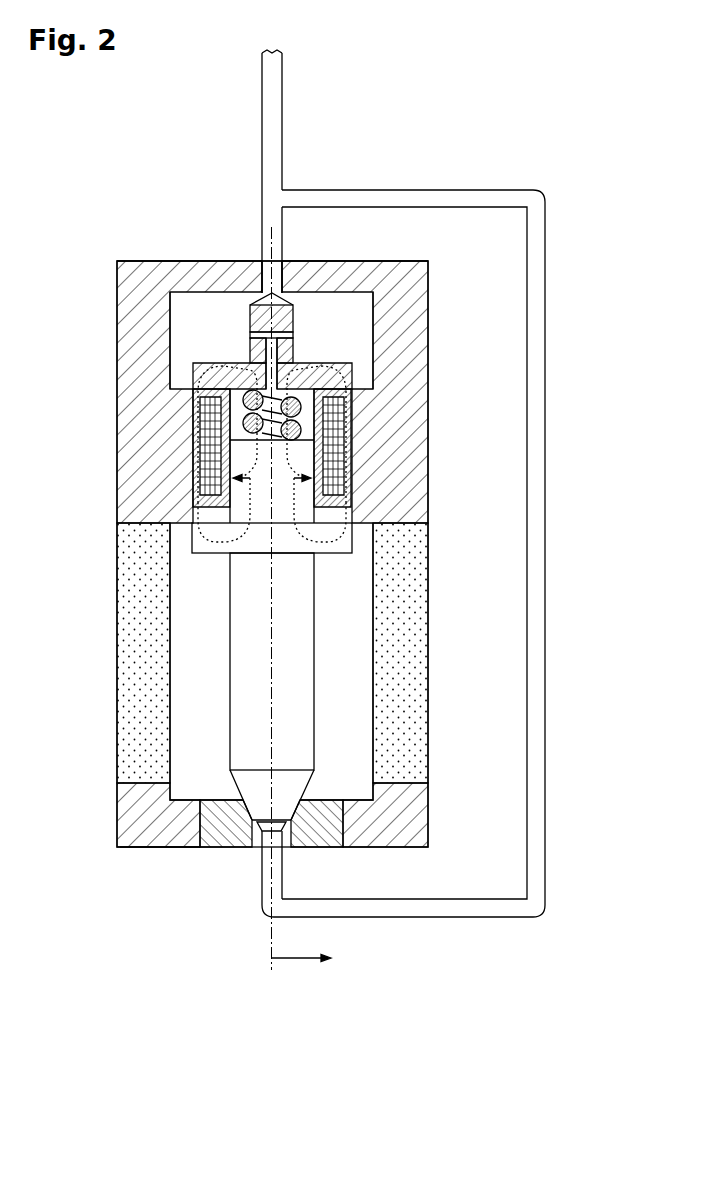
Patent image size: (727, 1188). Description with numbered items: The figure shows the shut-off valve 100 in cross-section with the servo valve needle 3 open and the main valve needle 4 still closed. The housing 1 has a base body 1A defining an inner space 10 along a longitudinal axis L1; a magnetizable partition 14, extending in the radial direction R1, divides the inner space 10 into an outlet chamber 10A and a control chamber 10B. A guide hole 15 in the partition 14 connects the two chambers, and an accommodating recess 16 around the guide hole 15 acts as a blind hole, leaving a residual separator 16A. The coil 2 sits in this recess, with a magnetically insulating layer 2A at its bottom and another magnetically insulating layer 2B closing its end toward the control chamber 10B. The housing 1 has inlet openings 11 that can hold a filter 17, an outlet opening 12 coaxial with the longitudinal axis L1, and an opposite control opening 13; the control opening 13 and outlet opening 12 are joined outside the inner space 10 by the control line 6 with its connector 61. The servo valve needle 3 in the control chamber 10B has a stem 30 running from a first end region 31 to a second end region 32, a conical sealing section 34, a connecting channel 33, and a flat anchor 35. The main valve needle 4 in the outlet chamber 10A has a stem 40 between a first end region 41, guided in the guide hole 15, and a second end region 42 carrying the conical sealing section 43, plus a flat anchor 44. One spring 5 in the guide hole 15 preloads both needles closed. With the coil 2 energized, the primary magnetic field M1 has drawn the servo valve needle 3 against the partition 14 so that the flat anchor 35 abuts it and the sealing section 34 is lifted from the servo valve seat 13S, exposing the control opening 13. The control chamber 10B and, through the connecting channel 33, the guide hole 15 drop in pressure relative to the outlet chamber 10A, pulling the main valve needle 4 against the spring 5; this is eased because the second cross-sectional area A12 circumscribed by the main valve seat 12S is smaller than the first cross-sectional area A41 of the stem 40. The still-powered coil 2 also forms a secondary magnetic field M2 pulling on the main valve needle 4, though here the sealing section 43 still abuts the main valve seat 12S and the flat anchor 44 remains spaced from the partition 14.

The shut-off valve 100 is at (78, 135).
The housing 1 is at (117, 824).
The base body 1A is at (138, 840).
The inner space 10 is at (207, 656).
The outlet chamber 10A is at (179, 598).
The control chamber 10B is at (180, 330).
The inlet opening 11 is at (128, 656).
The outlet opening 12 is at (252, 832).
The main valve seat 12S is at (250, 803).
The second cross-sectional area A12 is at (281, 822).
The control opening 13 is at (240, 261).
The servo valve seat 13S is at (296, 261).
The partition 14 is at (190, 368).
The guide hole 15 is at (312, 422).
The accommodating recess 16 is at (212, 450).
The residual separator 16A is at (200, 503).
The filter 17 is at (128, 688).
The coil 2 is at (200, 468).
The magnetically insulating layer 2A is at (352, 498).
The magnetically insulating layer 2B is at (196, 392).
The servo valve needle 3 is at (323, 328).
The stem 30 is at (258, 288).
The first end region 31 is at (297, 303).
The second end region 32 is at (297, 350).
The connecting channel 33 is at (250, 304).
The sealing section 34 is at (294, 302).
The flat anchor 35 is at (352, 375).
The main valve needle 4 is at (212, 708).
The stem 40 is at (290, 695).
The first end region 41 is at (323, 460).
The first cross-sectional area A41 is at (242, 528).
The second end region 42 is at (323, 752).
The sealing section 43 is at (293, 780).
The flat anchor 44 is at (353, 538).
The spring 5 is at (302, 405).
The control line 6 is at (546, 613).
The connector 61 is at (270, 93).
The longitudinal axis L1 is at (271, 940).
The primary magnetic field M1 is at (355, 434).
The secondary magnetic field M2 is at (352, 512).
The radial direction R1 is at (296, 960).